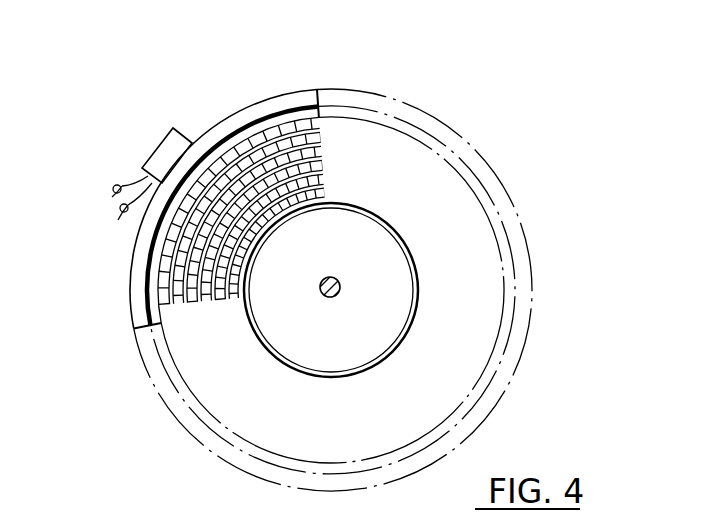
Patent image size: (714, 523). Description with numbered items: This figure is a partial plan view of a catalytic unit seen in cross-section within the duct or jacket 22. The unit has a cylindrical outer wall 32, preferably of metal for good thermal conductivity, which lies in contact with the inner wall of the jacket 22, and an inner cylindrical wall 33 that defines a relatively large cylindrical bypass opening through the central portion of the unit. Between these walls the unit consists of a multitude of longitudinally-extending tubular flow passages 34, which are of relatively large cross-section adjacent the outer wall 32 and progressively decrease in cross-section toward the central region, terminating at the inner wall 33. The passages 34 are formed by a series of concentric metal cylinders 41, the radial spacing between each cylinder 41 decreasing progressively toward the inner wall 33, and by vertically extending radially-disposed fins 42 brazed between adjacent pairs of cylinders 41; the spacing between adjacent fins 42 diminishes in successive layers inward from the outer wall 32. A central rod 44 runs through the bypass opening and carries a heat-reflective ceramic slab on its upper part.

The jacket 22 is at (260, 106).
The cylindrical outer wall 32 is at (295, 110).
The inner cylindrical wall 33 is at (385, 219).
The tubular flow passages 34 is at (170, 240).
The concentric metal cylinders 41 is at (173, 297).
The radially-disposed fins 42 is at (243, 158).
The central rod 44 is at (341, 288).